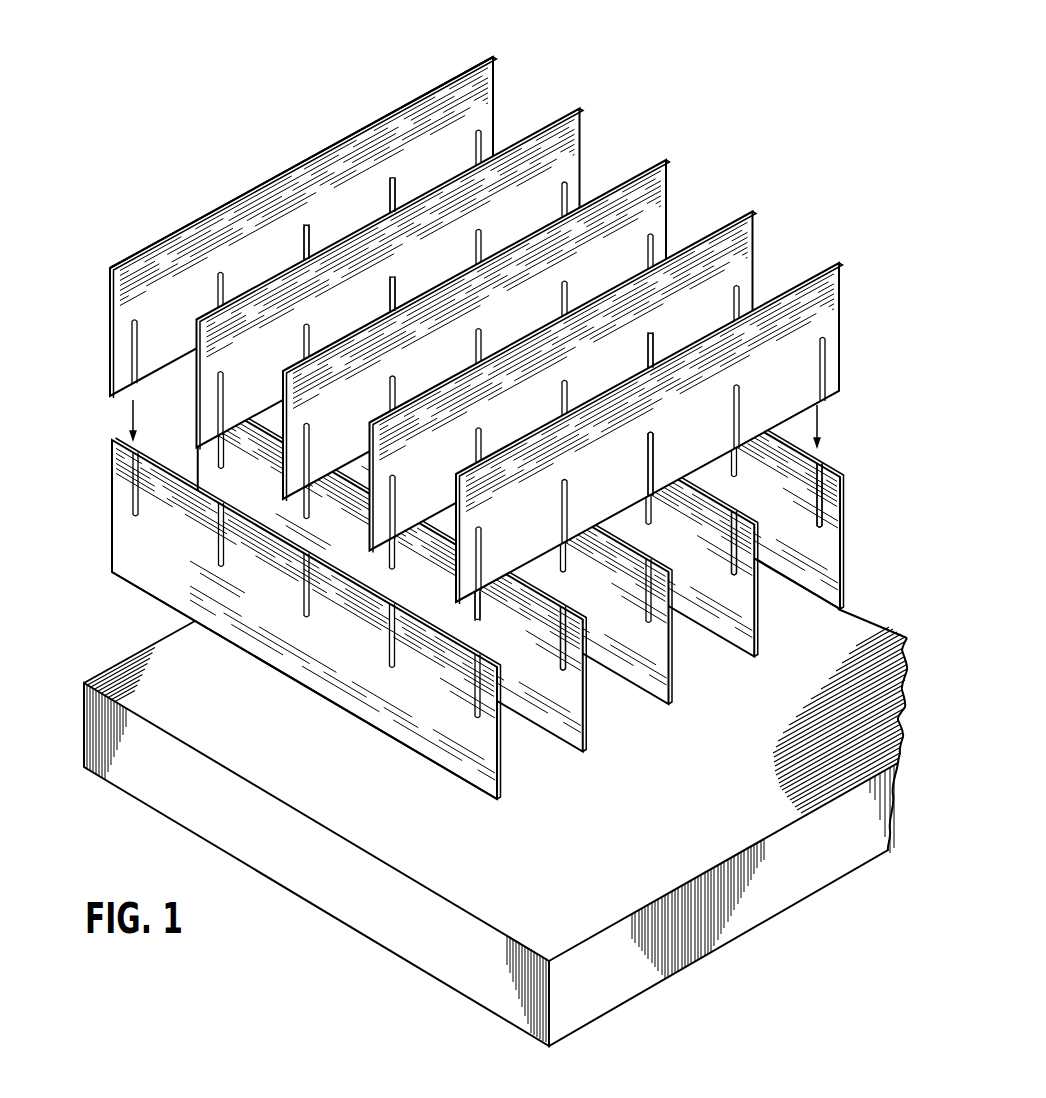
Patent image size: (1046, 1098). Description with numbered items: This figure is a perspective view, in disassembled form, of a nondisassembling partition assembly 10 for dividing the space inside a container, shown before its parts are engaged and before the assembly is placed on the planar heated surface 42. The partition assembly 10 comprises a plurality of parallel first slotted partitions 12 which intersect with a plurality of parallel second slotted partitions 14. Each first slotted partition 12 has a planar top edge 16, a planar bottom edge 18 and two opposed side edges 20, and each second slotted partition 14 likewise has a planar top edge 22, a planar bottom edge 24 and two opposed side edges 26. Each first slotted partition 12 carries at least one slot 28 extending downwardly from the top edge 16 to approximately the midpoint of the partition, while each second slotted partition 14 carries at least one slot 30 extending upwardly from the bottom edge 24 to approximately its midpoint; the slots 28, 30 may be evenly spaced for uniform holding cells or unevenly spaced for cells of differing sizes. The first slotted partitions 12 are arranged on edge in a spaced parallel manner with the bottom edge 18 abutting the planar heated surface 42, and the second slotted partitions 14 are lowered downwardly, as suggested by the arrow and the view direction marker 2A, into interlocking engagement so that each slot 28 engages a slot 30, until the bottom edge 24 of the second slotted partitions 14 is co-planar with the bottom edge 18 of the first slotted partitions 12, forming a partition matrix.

The partition assembly 10 is at (482, 542).
The first slotted partition 12 is at (495, 735).
The second slotted partition 14 is at (271, 160).
The top edge 16 is at (167, 469).
The bottom edge 18 is at (416, 754).
The side edges 20 is at (498, 787).
The top edge 22 is at (437, 92).
The bottom edge 24 is at (839, 392).
The side edges 26 is at (499, 75).
The slot 28 is at (481, 604).
The slot 30 is at (387, 292).
The section view direction arrow 2A is at (170, 365).
The planar heated surface 42 is at (654, 856).